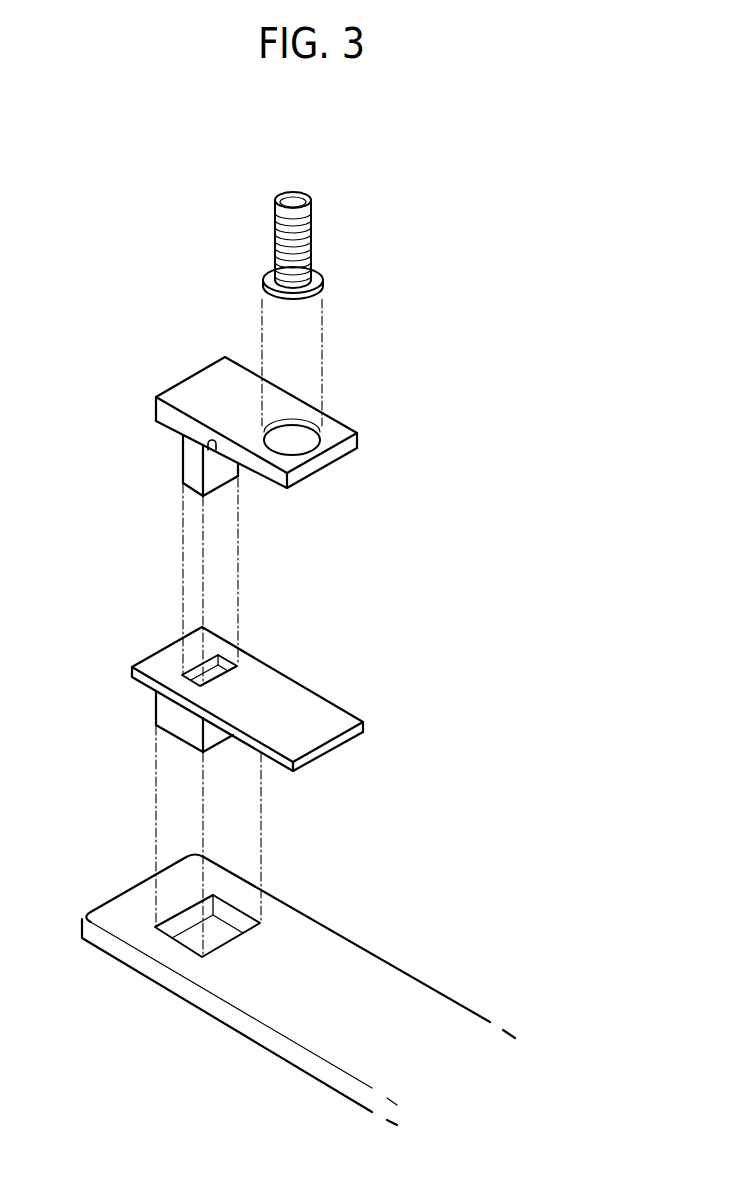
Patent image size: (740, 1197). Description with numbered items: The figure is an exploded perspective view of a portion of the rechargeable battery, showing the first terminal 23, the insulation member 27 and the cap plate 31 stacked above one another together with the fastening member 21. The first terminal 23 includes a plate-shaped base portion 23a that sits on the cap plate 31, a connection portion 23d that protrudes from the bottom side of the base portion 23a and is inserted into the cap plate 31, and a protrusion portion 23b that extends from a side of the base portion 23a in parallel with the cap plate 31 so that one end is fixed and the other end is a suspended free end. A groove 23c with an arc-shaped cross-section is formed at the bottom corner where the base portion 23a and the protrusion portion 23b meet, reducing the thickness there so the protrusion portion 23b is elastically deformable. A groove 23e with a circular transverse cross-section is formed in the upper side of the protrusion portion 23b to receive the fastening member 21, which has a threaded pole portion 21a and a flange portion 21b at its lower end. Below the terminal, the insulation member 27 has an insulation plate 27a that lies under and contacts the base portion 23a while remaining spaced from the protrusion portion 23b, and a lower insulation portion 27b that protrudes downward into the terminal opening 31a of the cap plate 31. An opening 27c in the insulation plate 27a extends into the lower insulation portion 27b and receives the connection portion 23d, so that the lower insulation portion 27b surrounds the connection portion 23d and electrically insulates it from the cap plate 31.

The fastening member 21 is at (294, 242).
The pole portion 21a is at (285, 236).
The flange portion 21b is at (314, 278).
The first terminal 23 is at (259, 443).
The base portion 23a is at (203, 390).
The protrusion portion 23b is at (268, 474).
The groove 23c is at (214, 448).
The connection portion 23d is at (190, 468).
The groove 23e is at (292, 442).
The insulation member 27 is at (232, 680).
The insulation plate 27a is at (310, 728).
The lower insulation portion 27b is at (168, 712).
The opening 27c is at (197, 677).
The cap plate 31 is at (290, 971).
The terminal opening 31a is at (185, 923).